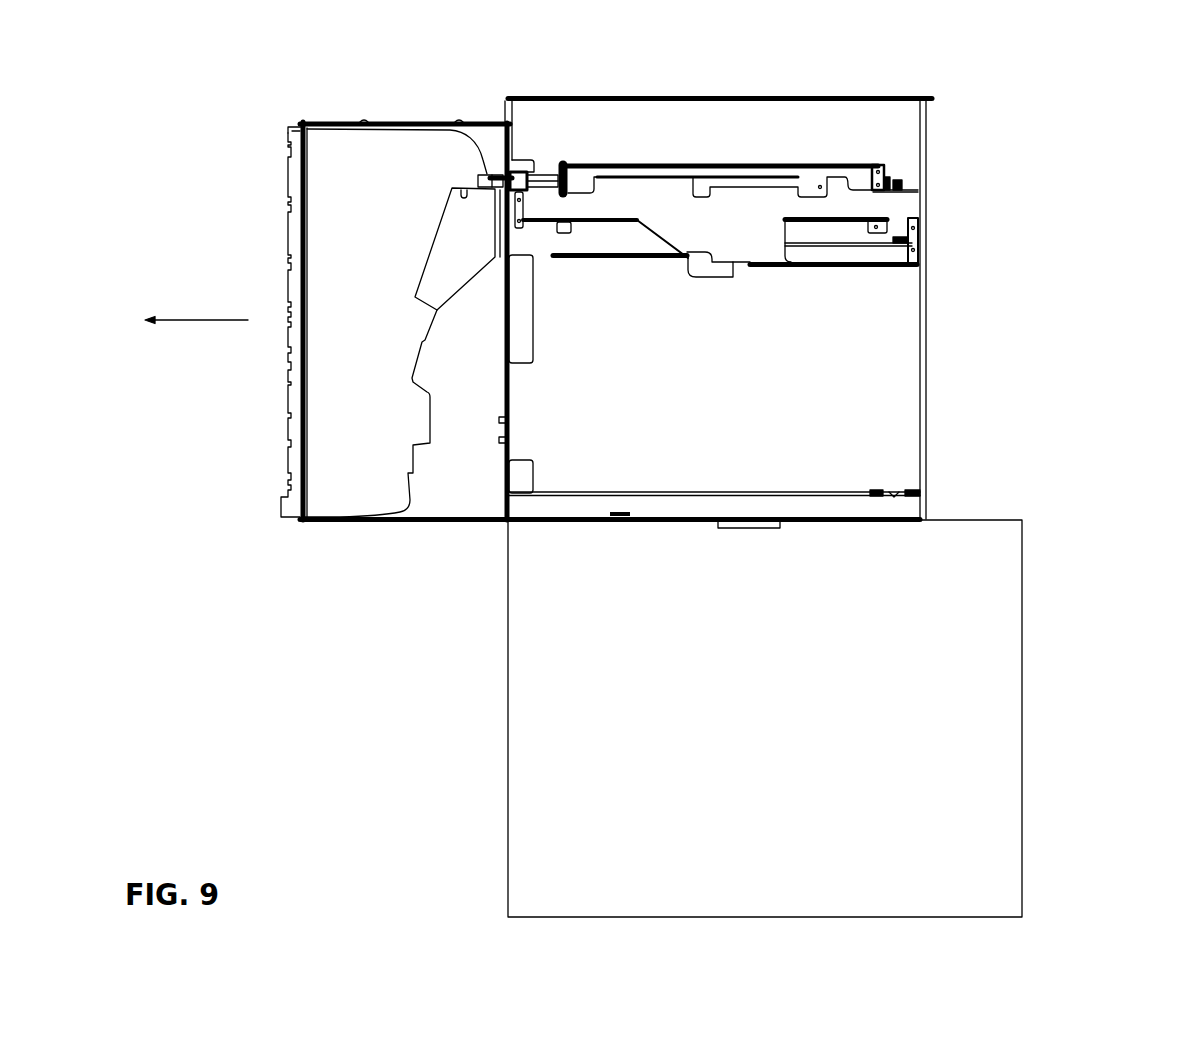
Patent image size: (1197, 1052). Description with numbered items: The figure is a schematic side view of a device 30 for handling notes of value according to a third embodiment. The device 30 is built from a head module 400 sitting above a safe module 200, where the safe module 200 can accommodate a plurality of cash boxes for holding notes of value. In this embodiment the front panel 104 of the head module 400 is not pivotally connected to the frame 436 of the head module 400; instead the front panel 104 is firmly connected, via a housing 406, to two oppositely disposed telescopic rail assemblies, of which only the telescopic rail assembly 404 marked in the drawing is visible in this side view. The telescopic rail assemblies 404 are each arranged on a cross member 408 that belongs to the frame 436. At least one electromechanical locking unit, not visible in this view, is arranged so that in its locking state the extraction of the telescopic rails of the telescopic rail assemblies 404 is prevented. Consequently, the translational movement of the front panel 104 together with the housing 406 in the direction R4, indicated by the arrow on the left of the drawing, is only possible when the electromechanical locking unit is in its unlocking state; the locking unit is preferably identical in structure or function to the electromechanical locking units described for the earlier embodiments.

The device for handling notes of value 30 is at (684, 270).
The frame 436 is at (519, 97).
The cross member 408 is at (797, 205).
The head module 400 is at (684, 276).
The telescopic rail assembly 404 is at (648, 286).
The housing 406 is at (321, 384).
The front panel 104 is at (258, 398).
The safe module 200 is at (1072, 586).
The direction of translational movement R4 is at (205, 320).